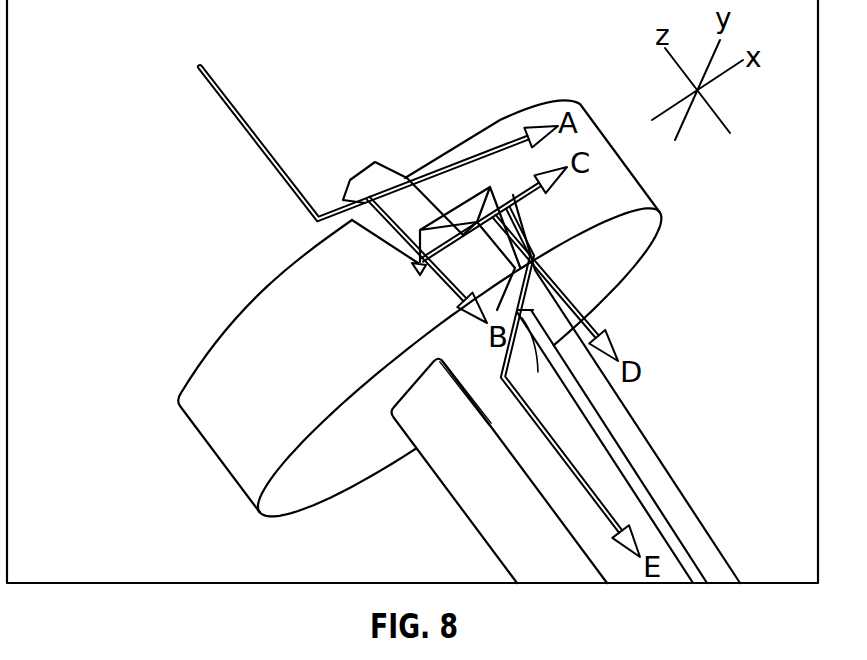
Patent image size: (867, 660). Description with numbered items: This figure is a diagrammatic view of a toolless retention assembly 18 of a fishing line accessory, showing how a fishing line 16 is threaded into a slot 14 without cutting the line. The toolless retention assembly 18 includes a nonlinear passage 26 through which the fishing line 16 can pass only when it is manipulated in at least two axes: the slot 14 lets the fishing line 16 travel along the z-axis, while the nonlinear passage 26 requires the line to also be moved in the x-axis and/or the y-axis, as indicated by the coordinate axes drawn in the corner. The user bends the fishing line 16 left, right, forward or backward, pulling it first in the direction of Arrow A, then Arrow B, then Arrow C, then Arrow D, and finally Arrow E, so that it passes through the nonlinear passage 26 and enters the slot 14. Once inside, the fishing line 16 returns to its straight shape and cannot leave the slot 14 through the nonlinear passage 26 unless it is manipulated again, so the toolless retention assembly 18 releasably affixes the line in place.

The slot 14 is at (607, 482).
The fishing line 16 is at (272, 157).
The toolless retention assembly 18 is at (230, 427).
The nonlinear passage 26 is at (520, 232).